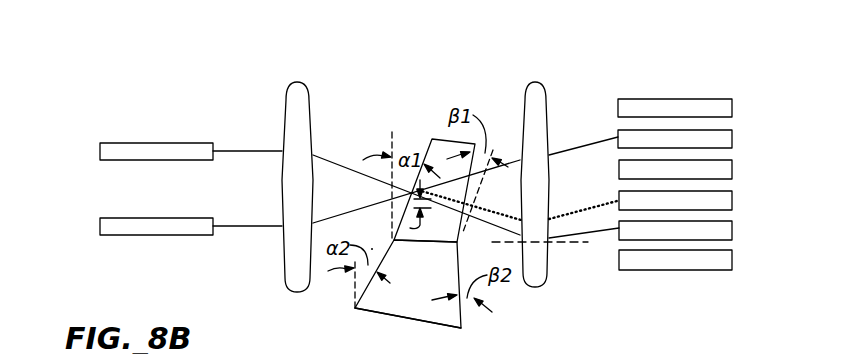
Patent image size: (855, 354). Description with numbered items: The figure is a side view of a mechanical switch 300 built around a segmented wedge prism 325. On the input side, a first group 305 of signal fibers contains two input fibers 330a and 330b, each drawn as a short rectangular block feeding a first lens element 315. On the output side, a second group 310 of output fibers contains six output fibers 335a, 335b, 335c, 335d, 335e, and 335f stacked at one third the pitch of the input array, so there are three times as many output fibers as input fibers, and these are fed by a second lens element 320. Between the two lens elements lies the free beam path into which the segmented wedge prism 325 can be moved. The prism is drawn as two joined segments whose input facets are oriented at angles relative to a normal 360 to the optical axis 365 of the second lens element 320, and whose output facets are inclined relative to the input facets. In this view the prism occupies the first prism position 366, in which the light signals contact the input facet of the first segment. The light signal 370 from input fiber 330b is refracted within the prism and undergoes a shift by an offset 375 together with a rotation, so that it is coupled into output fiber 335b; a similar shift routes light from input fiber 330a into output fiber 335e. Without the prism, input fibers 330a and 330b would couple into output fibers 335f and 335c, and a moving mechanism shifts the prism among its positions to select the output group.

The mechanical switch 300 is at (443, 78).
The first group of input fibers 305 is at (112, 127).
The second group of output fibers 310 is at (696, 64).
The first lens element 315 is at (297, 92).
The second lens element 320 is at (535, 92).
The segmented wedge prism 325 is at (462, 306).
The input fiber 330a is at (100, 224).
The input fiber 330b is at (100, 148).
The output fiber 335a is at (734, 260).
The output fiber 335b is at (734, 230).
The output fiber 335c is at (734, 200).
The output fiber 335d is at (734, 168).
The output fiber 335e is at (734, 138).
The output fiber 335f is at (726, 103).
The normal 360 is at (392, 133).
The optical axis 365 is at (560, 244).
The first prism position 366 is at (373, 320).
The light signal 370 is at (325, 155).
The offset 375 is at (393, 220).